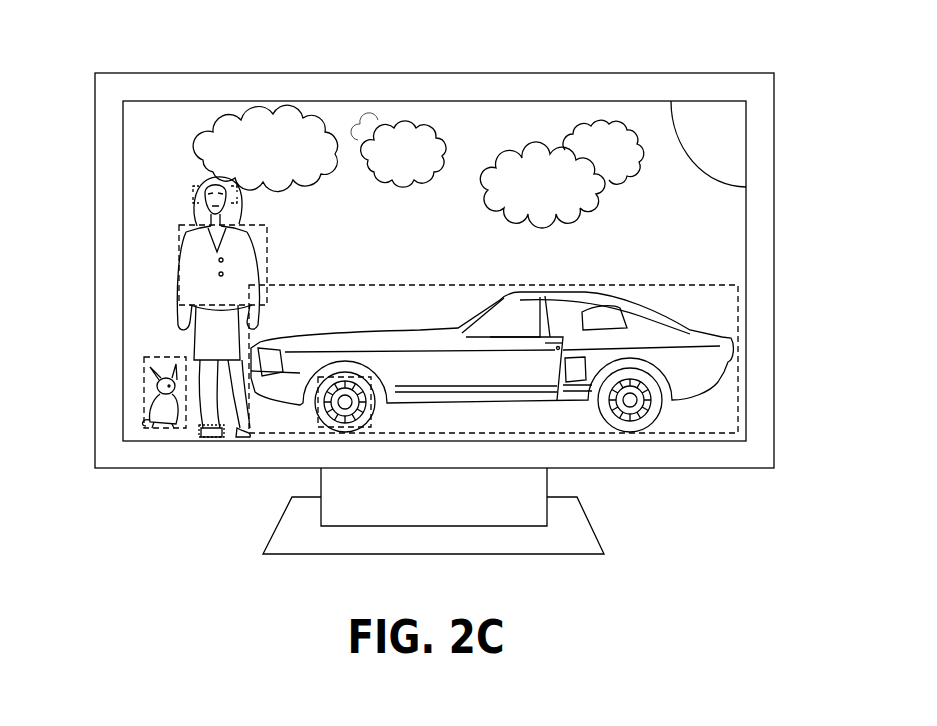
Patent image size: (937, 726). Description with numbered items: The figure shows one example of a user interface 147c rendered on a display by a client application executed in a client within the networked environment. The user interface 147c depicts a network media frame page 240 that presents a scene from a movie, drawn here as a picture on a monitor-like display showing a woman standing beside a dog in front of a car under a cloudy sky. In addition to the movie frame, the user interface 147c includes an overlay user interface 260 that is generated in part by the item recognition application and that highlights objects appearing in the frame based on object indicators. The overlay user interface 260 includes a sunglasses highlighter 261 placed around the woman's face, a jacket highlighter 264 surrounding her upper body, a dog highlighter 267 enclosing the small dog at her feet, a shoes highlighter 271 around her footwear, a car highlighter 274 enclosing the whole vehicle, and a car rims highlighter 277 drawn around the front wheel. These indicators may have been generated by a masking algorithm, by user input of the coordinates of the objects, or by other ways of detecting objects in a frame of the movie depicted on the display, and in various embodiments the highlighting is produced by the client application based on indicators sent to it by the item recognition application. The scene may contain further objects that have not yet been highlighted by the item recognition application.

The user interface 147c is at (718, 58).
The network media frame page 240 is at (122, 151).
The overlay user interface 260 is at (163, 101).
The sunglasses highlighter 261 is at (190, 196).
The jacket highlighter 264 is at (178, 264).
The dog highlighter 267 is at (143, 398).
The shoes highlighter 271 is at (198, 431).
The car highlighter 274 is at (472, 399).
The car rims highlighter 277 is at (331, 429).